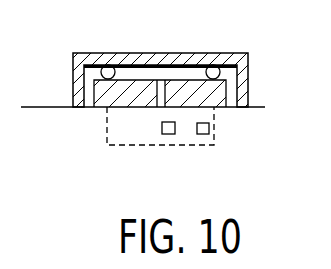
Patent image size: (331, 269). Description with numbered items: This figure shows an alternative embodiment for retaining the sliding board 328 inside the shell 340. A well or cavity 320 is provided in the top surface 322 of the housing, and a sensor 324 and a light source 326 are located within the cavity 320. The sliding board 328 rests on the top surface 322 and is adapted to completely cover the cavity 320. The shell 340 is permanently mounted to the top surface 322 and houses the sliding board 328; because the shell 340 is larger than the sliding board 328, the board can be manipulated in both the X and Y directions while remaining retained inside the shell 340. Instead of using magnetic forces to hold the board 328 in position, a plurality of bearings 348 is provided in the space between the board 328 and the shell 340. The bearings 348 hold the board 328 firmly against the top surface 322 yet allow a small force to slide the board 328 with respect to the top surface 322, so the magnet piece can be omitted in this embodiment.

The cavity 320 is at (218, 142).
The top surface 322 is at (253, 106).
The sensor 324 is at (168, 134).
The light source 326 is at (209, 127).
The sliding board 328 is at (108, 90).
The shell 340 is at (160, 53).
The bearings 348 is at (108, 64).